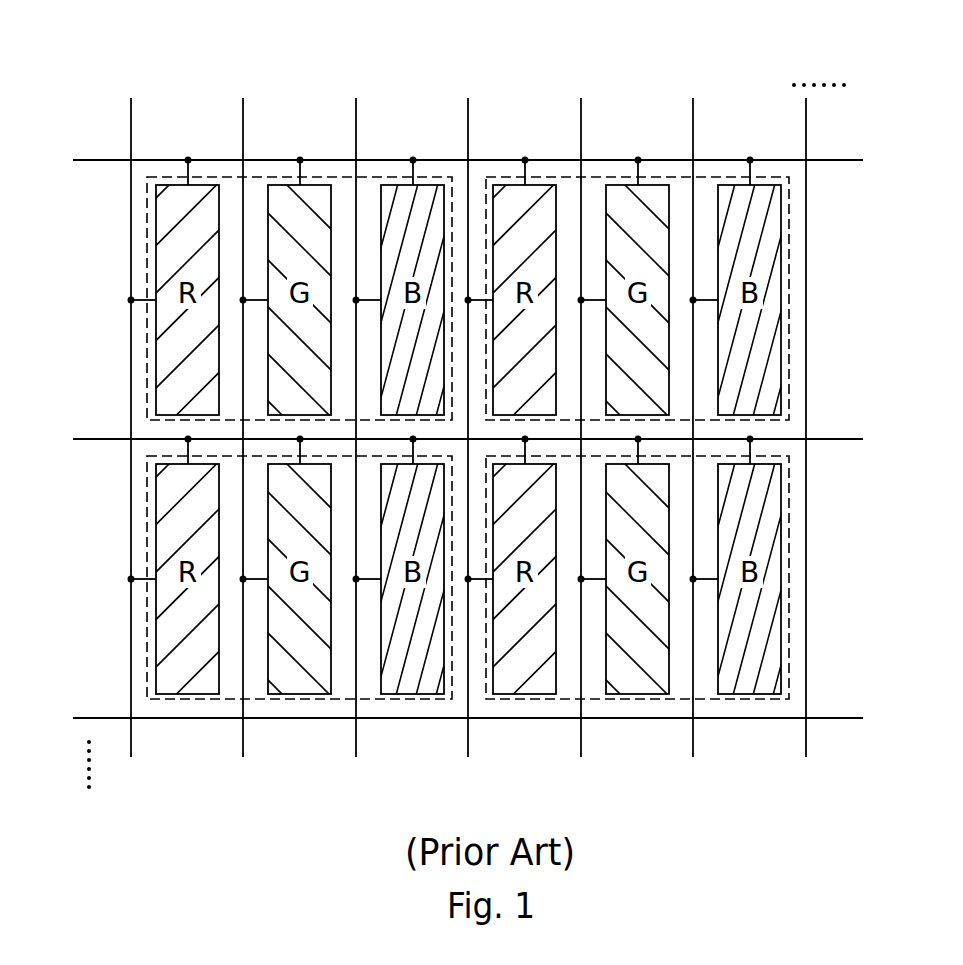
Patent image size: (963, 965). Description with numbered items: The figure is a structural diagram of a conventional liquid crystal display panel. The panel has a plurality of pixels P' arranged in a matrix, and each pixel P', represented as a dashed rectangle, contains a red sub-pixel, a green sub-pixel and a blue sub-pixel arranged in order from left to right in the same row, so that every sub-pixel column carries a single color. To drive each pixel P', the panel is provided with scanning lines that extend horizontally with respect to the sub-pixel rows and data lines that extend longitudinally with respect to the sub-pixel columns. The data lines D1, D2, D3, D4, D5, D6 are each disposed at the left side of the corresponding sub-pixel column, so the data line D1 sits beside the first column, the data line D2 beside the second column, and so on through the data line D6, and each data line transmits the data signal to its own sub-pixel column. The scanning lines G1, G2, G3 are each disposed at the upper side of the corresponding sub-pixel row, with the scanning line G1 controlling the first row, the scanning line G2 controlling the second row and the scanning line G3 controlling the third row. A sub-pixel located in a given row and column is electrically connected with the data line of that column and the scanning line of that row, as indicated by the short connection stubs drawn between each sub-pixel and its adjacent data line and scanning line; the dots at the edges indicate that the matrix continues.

The pixel P' is at (299, 213).
The data line D1 is at (130, 408).
The data line D2 is at (242, 408).
The data line D3 is at (355, 408).
The data line D4 is at (468, 408).
The data line D5 is at (580, 408).
The data line D6 is at (689, 408).
The scanning line G1 is at (447, 156).
The scanning line G2 is at (447, 435).
The scanning line G3 is at (447, 714).